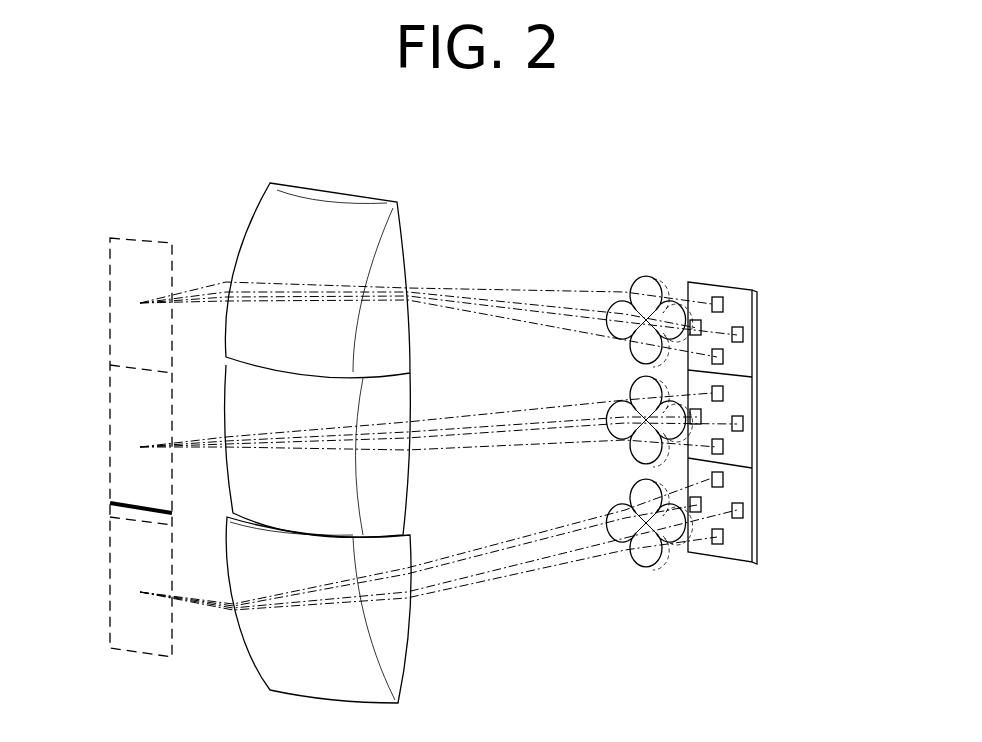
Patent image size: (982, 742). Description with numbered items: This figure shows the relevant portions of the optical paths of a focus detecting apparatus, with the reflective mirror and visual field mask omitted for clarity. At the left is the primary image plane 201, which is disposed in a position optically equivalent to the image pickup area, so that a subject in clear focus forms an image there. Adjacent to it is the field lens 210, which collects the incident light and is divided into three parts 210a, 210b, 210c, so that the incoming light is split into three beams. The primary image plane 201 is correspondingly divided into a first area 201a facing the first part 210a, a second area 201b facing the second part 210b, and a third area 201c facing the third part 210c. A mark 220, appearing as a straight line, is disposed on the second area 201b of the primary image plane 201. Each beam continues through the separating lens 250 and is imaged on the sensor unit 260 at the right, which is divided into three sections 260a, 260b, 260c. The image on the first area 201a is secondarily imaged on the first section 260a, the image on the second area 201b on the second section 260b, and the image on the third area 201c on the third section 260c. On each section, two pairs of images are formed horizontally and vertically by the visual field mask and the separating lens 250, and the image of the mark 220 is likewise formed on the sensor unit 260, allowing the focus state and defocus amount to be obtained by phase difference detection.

The primary image plane 201 is at (132, 238).
The first area of the primary image plane 201a is at (118, 281).
The second area of the primary image plane 201b is at (118, 415).
The third area of the primary image plane 201c is at (118, 588).
The mark 220 is at (110, 503).
The field lens 210 is at (391, 420).
The first part of the field lens 210a is at (407, 236).
The second part of the field lens 210b is at (407, 412).
The third part of the field lens 210c is at (407, 553).
The separating lens 250 is at (647, 276).
The sensor unit 260 is at (790, 423).
The first section of the sensor unit 260a is at (758, 332).
The second section of the sensor unit 260b is at (758, 413).
The third section of the sensor unit 260c is at (758, 502).